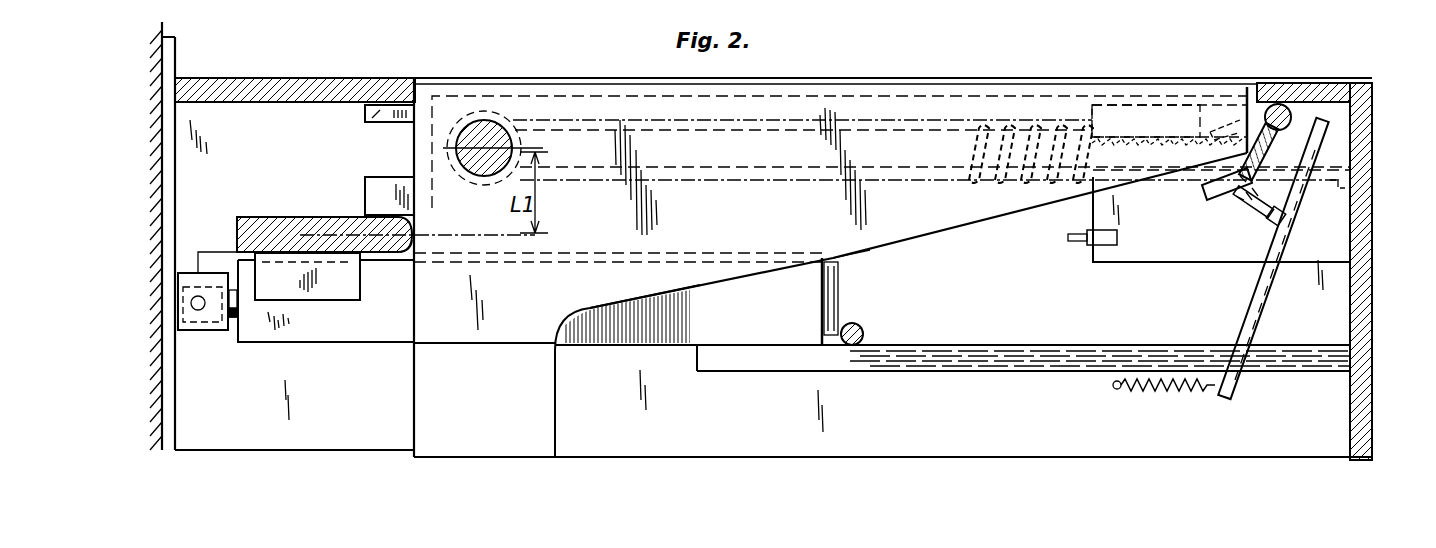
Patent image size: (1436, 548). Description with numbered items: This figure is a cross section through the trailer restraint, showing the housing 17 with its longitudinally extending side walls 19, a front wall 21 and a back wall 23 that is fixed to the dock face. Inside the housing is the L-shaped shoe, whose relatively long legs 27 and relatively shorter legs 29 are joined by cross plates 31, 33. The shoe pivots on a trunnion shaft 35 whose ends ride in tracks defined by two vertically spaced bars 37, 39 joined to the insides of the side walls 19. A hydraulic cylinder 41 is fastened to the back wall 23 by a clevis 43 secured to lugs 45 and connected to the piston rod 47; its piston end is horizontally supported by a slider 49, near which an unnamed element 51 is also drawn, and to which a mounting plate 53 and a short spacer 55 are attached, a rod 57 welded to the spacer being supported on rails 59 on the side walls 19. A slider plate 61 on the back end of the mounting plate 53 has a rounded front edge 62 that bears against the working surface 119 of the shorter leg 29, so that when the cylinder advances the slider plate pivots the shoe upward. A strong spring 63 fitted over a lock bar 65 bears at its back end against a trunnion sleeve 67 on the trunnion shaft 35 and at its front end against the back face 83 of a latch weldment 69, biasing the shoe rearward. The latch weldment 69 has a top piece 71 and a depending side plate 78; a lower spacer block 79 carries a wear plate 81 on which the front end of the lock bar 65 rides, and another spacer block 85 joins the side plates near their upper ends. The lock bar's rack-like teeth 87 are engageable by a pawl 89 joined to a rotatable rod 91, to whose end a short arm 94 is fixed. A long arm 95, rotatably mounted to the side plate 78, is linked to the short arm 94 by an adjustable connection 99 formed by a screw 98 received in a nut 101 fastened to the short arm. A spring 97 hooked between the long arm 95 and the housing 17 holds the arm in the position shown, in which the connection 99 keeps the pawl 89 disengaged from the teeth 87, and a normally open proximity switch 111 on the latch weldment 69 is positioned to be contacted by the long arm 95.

The housing 17 is at (1392, 110).
The side walls 19 is at (258, 140).
The front wall 21 is at (1362, 262).
The back wall 23 is at (166, 144).
The long legs 27 is at (1018, 98).
The shorter legs 29 is at (530, 404).
The cross plate 31 is at (1150, 104).
The cross plate 33 is at (436, 100).
The trunnion shaft 35 is at (482, 132).
The bar 37 is at (365, 187).
The bar 39 is at (365, 115).
The hydraulic cylinder 41 is at (346, 320).
The clevis 43 is at (178, 290).
The lugs 45 is at (212, 330).
The piston rod 47 is at (233, 318).
The slider 49 is at (866, 288).
The stop post 51 is at (818, 262).
The mounting plate 53 is at (348, 290).
The spacer 55 is at (840, 300).
The rod 57 is at (862, 328).
The rails 59 is at (1040, 358).
The slider plate 61 is at (237, 224).
The front edge 62 is at (412, 255).
The spring 63 is at (1046, 206).
The lock bar 65 is at (852, 160).
The trunnion sleeve 67 is at (516, 118).
The latch weldment 69 is at (1184, 276).
The top piece 71 is at (1338, 95).
The side plate 78 is at (1330, 256).
The spacer block 79 is at (1348, 190).
The wear plate 81 is at (1330, 170).
The back face 83 is at (1090, 252).
The spacer block 85 is at (1110, 108).
The rack-like teeth 87 is at (1190, 128).
The pawl 89 is at (1262, 118).
The rod 91 is at (1284, 106).
The short arm 94 is at (1205, 182).
The long arm 95 is at (1258, 308).
The spring 97 is at (1180, 392).
The screw 98 is at (1262, 212).
The adjustable connection 99 is at (1219, 228).
The nut 101 is at (1232, 198).
The proximity switch 111 is at (1117, 236).
The working surface 119 is at (414, 402).